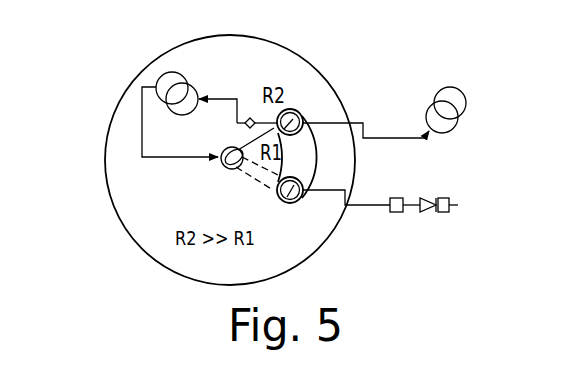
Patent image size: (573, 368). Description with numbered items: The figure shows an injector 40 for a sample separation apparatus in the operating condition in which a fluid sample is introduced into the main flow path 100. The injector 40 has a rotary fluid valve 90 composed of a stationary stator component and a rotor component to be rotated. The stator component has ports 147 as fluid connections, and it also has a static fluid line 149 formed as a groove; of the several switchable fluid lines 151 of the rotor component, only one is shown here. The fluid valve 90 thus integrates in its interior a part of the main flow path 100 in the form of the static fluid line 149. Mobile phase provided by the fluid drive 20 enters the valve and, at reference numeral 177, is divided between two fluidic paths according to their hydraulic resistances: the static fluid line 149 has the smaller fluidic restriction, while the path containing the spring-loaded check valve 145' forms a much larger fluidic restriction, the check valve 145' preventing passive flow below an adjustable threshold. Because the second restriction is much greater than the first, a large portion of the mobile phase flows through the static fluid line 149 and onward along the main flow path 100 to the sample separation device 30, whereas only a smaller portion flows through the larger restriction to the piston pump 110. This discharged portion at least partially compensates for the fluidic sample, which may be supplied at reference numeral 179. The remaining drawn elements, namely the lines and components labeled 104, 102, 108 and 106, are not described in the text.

The injector 40 is at (194, 142).
The rotary fluid valve 90 is at (107, 163).
The piston pump 110 is at (170, 72).
The optical fiber 104 is at (214, 96).
The check valve 145' is at (260, 89).
The electrical connection 102 is at (206, 166).
The ports 147 is at (228, 150).
The fluid lines 151 is at (260, 178).
The first fiber end 108 is at (292, 108).
The second fiber end 106 is at (292, 204).
The division point 177 is at (331, 128).
The static fluid line 149 is at (306, 162).
The main flow path 100 is at (365, 201).
The sample supply point 179 is at (302, 200).
The fluid drive 20 is at (448, 88).
The sample separation device 30 is at (443, 197).